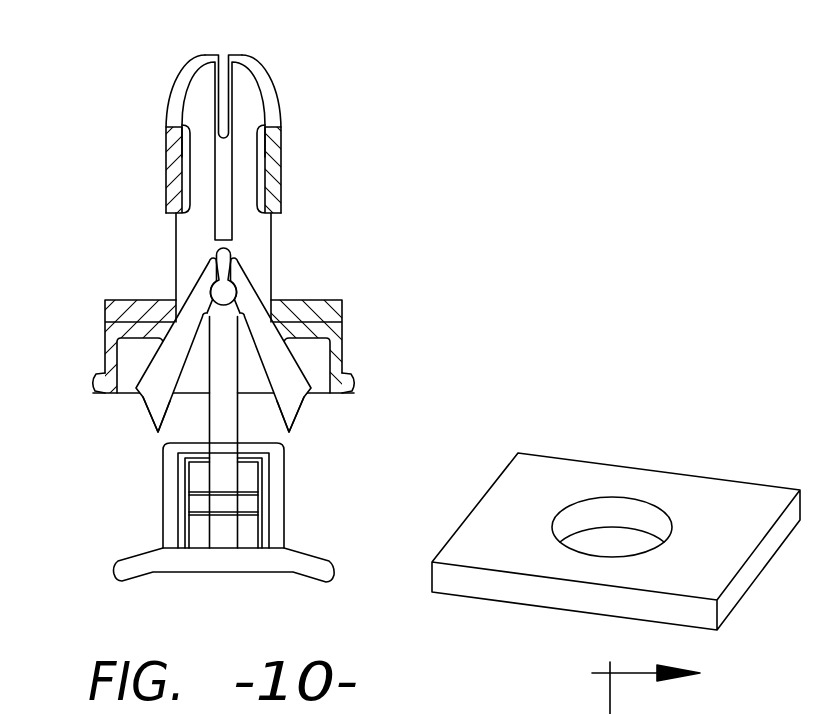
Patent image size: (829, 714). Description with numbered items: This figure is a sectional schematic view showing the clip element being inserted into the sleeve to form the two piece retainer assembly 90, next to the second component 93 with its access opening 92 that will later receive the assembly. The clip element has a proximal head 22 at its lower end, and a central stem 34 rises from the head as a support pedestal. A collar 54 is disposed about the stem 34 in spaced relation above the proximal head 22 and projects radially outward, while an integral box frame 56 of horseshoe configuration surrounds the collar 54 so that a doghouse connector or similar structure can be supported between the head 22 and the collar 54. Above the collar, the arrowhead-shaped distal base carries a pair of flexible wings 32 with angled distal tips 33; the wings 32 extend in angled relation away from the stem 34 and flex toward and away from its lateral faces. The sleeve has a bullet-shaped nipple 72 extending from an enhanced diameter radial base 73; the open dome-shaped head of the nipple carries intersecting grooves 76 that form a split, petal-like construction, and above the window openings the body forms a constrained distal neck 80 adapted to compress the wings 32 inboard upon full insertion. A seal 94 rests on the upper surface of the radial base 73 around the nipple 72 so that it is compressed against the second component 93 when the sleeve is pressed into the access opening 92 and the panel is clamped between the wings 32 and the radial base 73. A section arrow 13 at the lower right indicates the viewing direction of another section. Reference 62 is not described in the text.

The section line indicator 13 is at (672, 685).
The proximal head 22 is at (321, 553).
The flexible wings 32 is at (281, 328).
The angled distal tips 33 is at (150, 414).
The central stem 34 is at (232, 416).
The collar 54 is at (271, 486).
The box frame 56 is at (158, 466).
The arms 62 is at (174, 250).
The nipple 72 is at (284, 153).
The radial base 73 is at (346, 347).
The grooves 76 is at (224, 95).
The constrained distal neck 80 is at (170, 167).
The two piece retainer assembly 90 is at (355, 143).
The access opening 92 is at (615, 537).
The second component 93 is at (735, 510).
The seal 94 is at (339, 298).